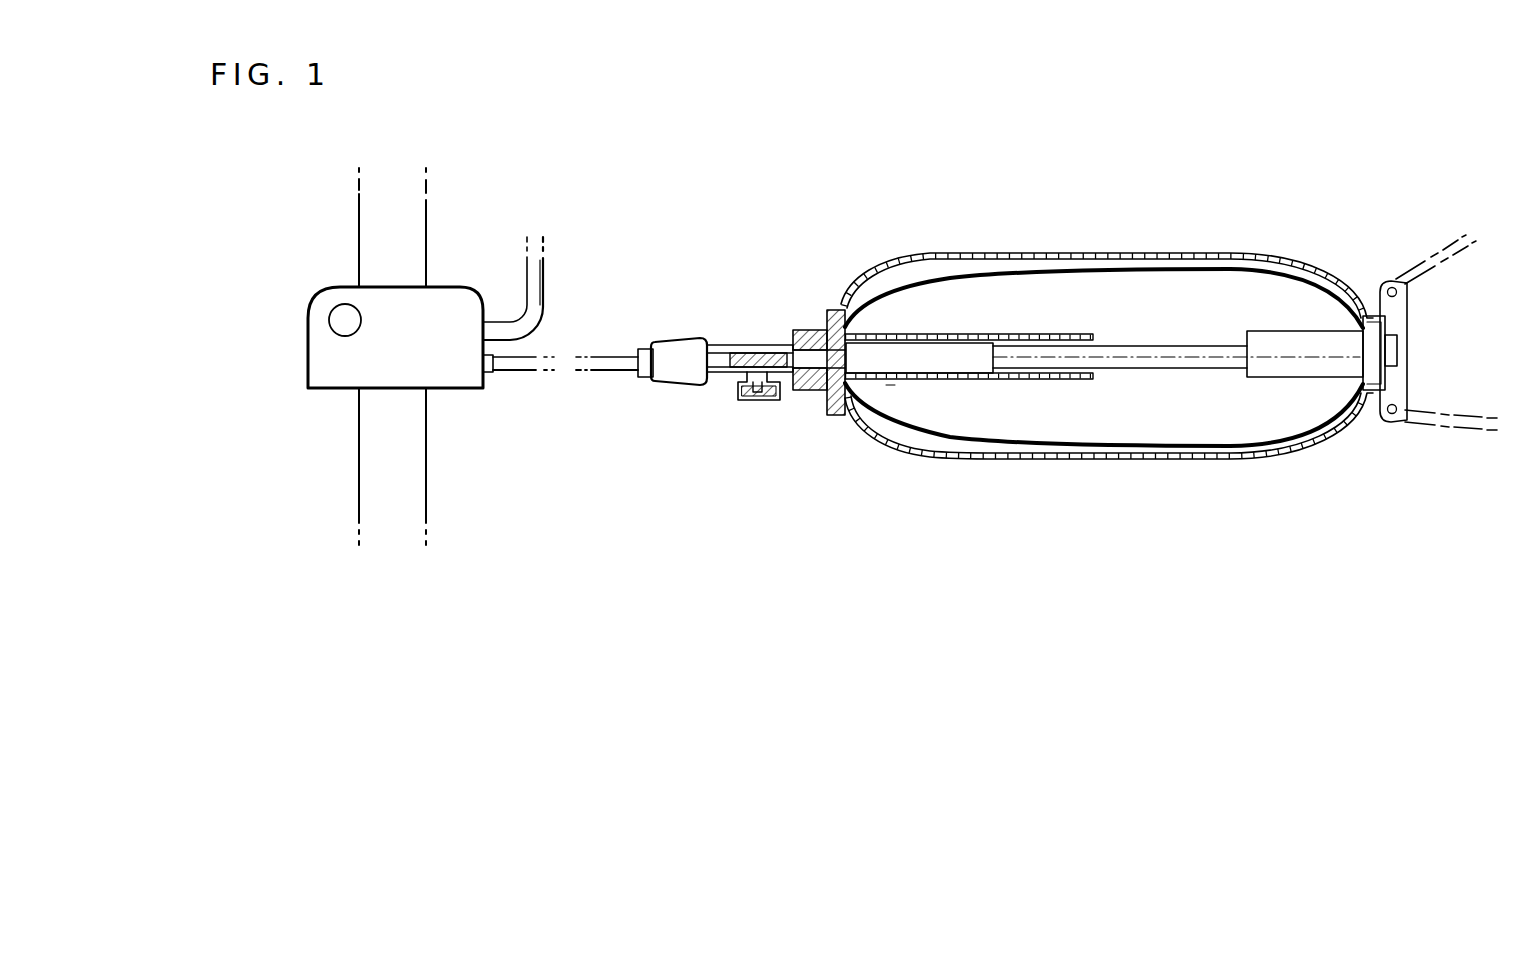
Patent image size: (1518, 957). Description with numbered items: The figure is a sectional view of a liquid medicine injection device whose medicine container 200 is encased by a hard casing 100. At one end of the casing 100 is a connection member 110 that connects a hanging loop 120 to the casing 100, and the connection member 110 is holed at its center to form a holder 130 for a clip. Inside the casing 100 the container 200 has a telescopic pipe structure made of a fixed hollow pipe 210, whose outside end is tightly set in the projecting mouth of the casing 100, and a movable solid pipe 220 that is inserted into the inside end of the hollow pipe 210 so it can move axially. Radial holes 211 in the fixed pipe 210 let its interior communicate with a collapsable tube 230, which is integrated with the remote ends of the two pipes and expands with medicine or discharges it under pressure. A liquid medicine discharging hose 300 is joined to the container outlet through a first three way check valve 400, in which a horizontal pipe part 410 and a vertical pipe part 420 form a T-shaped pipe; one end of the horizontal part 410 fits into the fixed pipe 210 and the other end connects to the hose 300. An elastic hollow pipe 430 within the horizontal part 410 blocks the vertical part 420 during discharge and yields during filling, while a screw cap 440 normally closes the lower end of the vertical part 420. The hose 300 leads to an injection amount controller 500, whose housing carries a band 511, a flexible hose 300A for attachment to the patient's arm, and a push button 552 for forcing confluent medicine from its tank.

The hard casing 100 is at (913, 258).
The connection member 110 is at (1407, 316).
The hanging loop 120 is at (1437, 257).
The holder 130 is at (1396, 349).
The medicine container 200 is at (1104, 299).
The fixed hollow pipe 210 is at (955, 380).
The radial holes 211 is at (895, 388).
The movable solid pipe 220 is at (1143, 368).
The collapsable tube 230 is at (968, 455).
The liquid medicine discharging hose 300 is at (600, 372).
The flexible hose 300A is at (543, 276).
The first three way check valve 400 is at (742, 344).
The horizontal pipe part 410 is at (718, 344).
The vertical pipe part 420 is at (753, 400).
The elastic hollow pipe 430 is at (770, 353).
The screw cap 440 is at (772, 400).
The injection amount controller 500 is at (328, 394).
The band 511 is at (366, 497).
The push button 552 is at (338, 322).